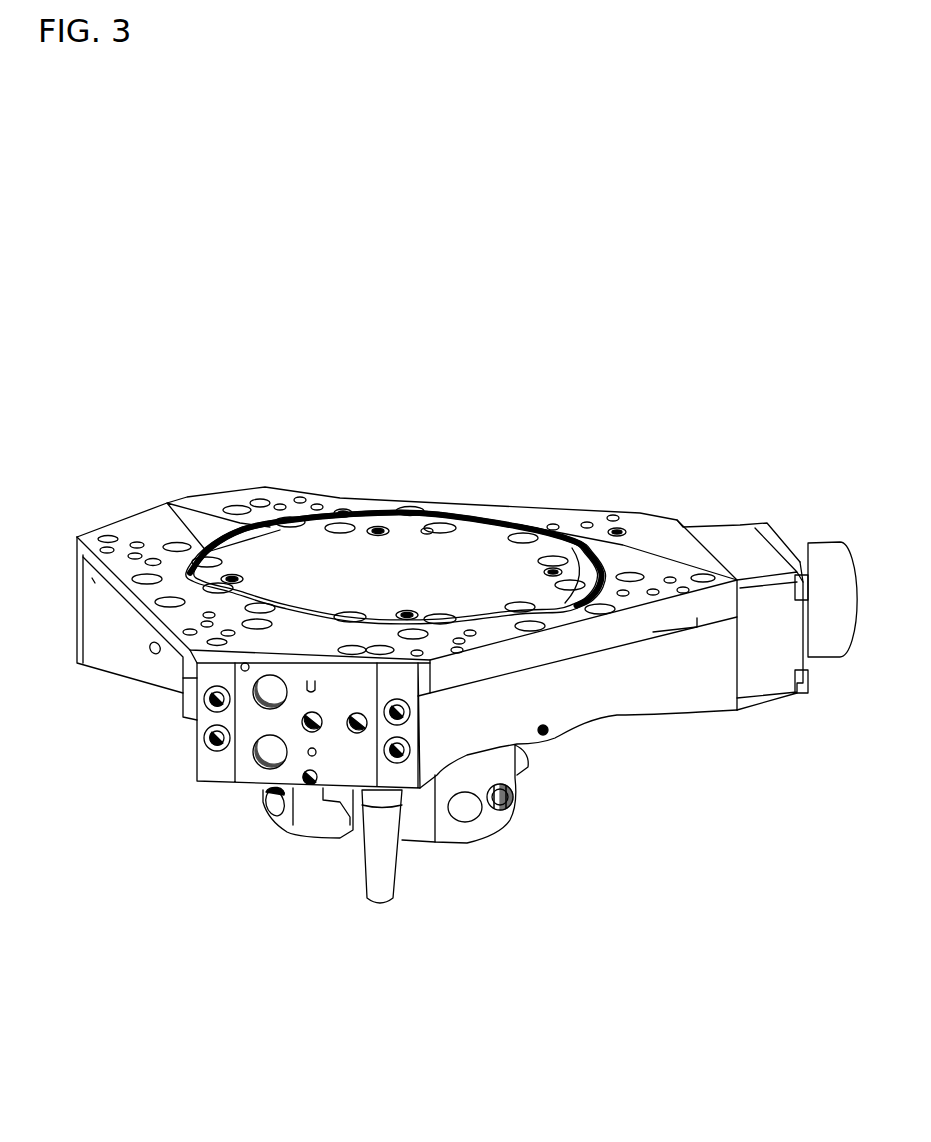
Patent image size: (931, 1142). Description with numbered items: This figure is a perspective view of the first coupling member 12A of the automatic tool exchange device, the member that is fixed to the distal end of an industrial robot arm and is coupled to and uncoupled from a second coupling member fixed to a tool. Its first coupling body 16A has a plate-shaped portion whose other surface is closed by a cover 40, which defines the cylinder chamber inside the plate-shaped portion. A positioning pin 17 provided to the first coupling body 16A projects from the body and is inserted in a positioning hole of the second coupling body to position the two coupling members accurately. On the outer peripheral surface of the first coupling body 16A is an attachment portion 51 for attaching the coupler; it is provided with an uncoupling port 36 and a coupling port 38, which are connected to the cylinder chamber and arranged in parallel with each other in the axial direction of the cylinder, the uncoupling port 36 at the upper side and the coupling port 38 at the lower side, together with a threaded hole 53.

The first coupling member 12A is at (607, 508).
The first coupling body 16A is at (140, 613).
The positioning pin 17 is at (378, 870).
The uncoupling port 36 is at (263, 700).
The coupling port 38 is at (263, 767).
The cover 40 is at (480, 555).
The attachment portion 51 is at (345, 700).
The threaded hole 53 is at (218, 724).